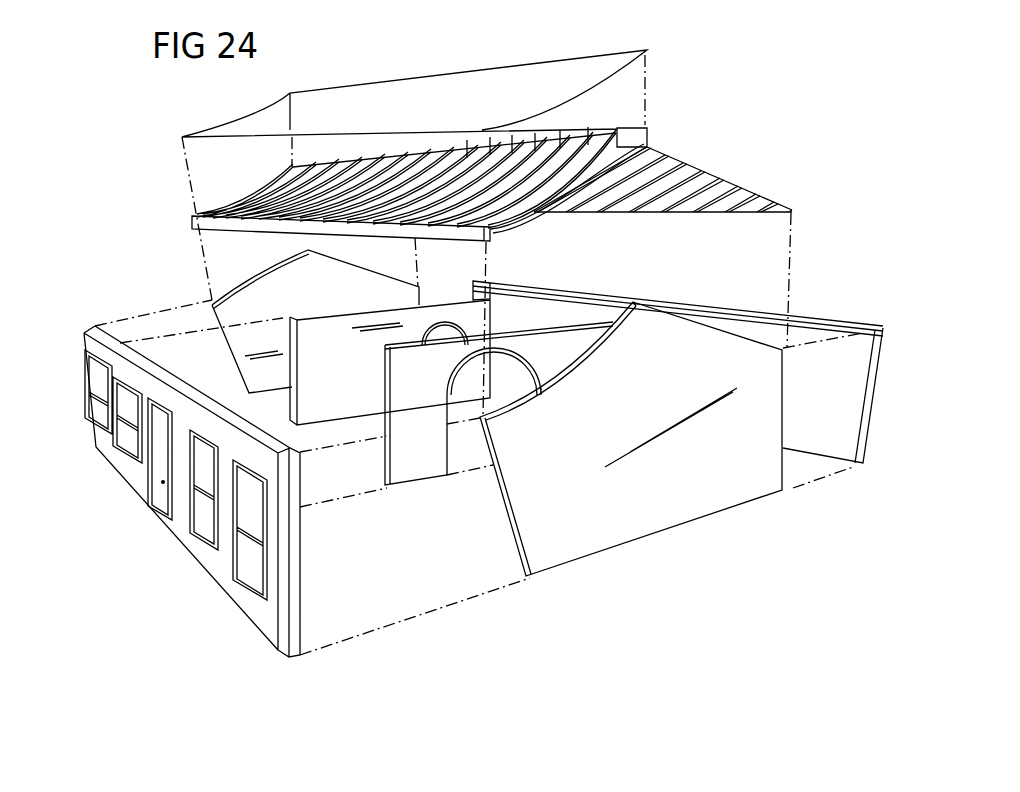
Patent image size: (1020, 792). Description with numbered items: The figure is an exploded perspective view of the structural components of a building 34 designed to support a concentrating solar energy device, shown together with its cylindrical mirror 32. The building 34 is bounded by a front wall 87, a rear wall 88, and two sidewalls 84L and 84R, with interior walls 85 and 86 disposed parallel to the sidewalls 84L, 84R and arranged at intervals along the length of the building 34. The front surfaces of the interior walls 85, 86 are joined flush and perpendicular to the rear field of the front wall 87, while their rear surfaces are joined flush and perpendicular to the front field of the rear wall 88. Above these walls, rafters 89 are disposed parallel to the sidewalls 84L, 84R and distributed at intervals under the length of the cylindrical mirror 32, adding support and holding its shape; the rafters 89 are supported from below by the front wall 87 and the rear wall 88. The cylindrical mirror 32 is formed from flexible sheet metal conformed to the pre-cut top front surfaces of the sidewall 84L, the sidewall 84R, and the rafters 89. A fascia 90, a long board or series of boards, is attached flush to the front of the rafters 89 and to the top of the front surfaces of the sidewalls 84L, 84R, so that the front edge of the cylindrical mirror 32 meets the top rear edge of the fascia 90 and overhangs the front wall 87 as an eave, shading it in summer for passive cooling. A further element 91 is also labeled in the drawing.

The building 34 is at (104, 246).
The cylindrical mirror 32 is at (430, 117).
The fascia 90 is at (290, 227).
The rafters 89 is at (715, 173).
The sidewall 84L is at (347, 301).
The sidewall 84R is at (667, 400).
The interior wall 85 is at (345, 380).
The interior wall 86 is at (428, 397).
The front wall 87 is at (190, 498).
The rear wall 88 is at (853, 400).
The top rail 91 is at (552, 287).